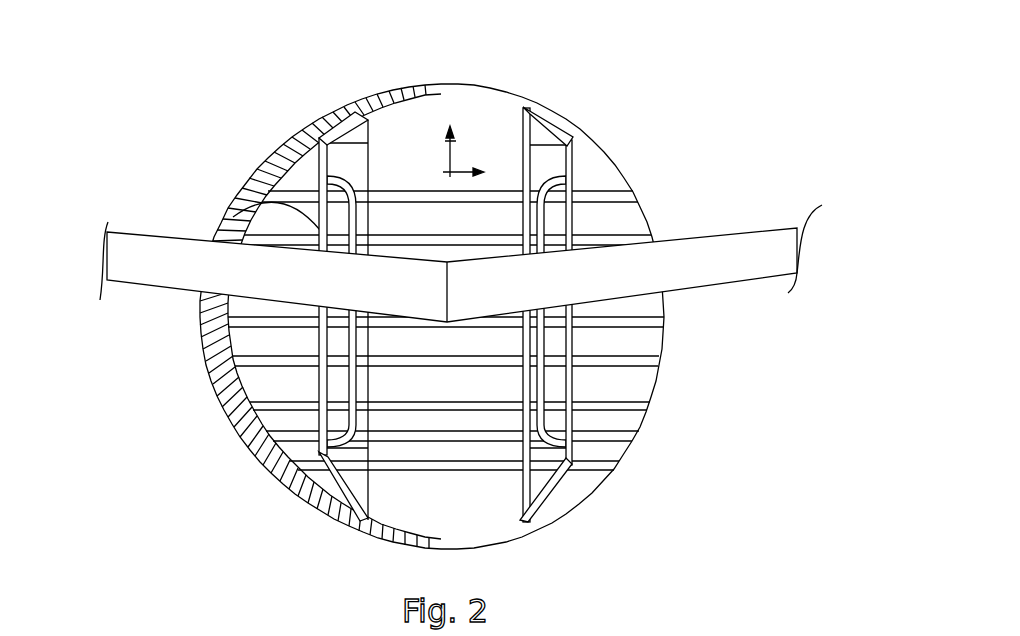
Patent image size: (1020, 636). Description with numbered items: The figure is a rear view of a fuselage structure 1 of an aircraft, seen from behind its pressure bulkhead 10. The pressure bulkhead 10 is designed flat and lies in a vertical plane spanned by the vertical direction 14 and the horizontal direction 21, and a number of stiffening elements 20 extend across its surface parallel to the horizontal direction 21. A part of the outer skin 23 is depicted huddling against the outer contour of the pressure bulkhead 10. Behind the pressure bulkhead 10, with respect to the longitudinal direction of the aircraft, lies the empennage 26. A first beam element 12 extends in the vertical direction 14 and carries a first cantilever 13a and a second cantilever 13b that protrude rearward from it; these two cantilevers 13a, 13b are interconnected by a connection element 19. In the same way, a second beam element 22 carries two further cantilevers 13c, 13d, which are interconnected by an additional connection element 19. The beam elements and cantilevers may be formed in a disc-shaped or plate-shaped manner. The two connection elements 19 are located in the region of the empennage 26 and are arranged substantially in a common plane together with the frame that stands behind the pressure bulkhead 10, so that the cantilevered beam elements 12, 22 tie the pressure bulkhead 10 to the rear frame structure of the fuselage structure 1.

The fuselage structure 1 is at (460, 278).
The pressure bulkhead 10 is at (602, 170).
The first beam element 12 is at (528, 218).
The first cantilever 13a is at (600, 165).
The second cantilever 13b is at (555, 455).
The cantilever 13c is at (338, 158).
The cantilever 13d is at (338, 455).
The vertical direction 14 is at (447, 160).
The connection element 19 is at (222, 214).
The stiffening elements 20 is at (625, 360).
The horizontal direction 21 is at (463, 165).
The second beam element 22 is at (363, 214).
The outer skin 23 is at (222, 392).
The empennage 26 is at (713, 257).